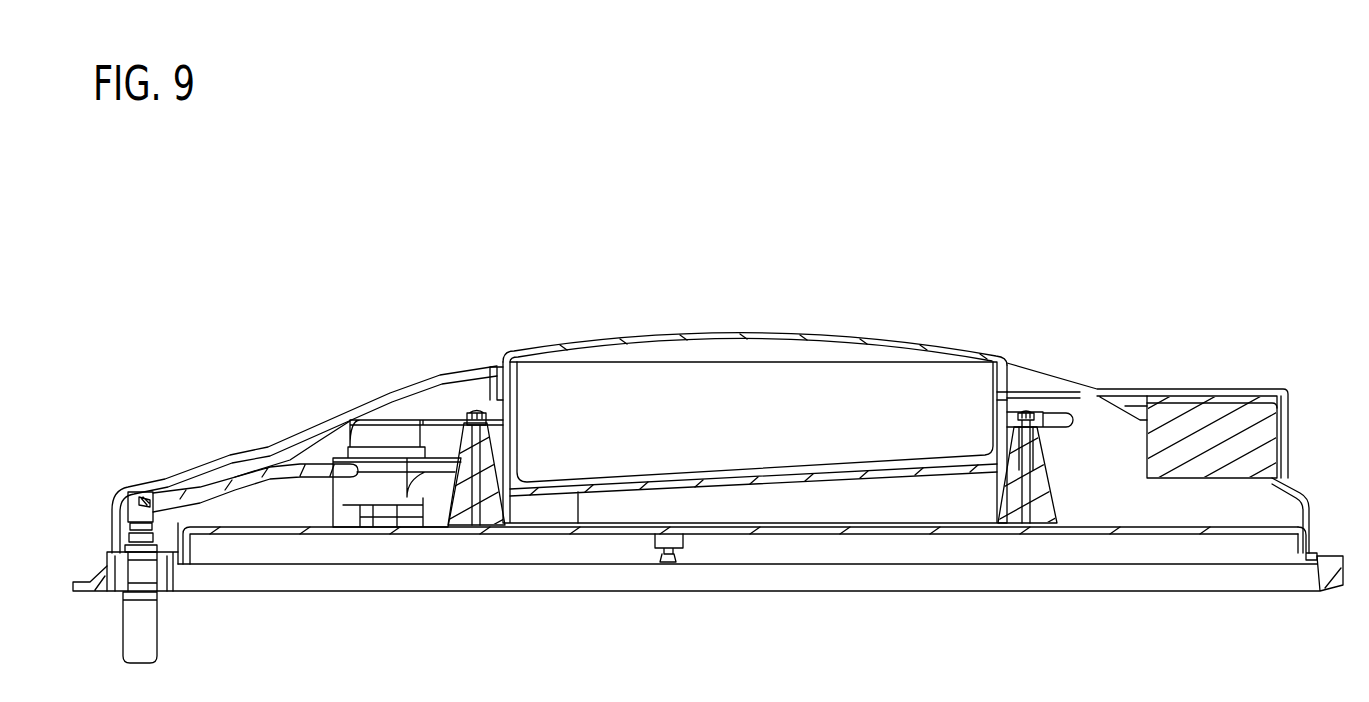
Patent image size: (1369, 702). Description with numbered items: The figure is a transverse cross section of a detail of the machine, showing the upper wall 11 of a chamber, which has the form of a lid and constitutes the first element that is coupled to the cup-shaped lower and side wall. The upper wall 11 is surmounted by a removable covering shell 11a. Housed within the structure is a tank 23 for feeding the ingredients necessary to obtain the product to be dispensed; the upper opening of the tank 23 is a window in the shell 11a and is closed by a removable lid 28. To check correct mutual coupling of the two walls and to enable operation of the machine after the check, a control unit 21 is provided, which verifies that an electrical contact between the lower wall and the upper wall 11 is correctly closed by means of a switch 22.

The upper wall 11 is at (898, 573).
The removable covering shell 11a is at (1077, 397).
The control unit 21 is at (1190, 430).
The switch 22 is at (101, 538).
The tank 23 is at (750, 398).
The removable lid 28 is at (661, 333).